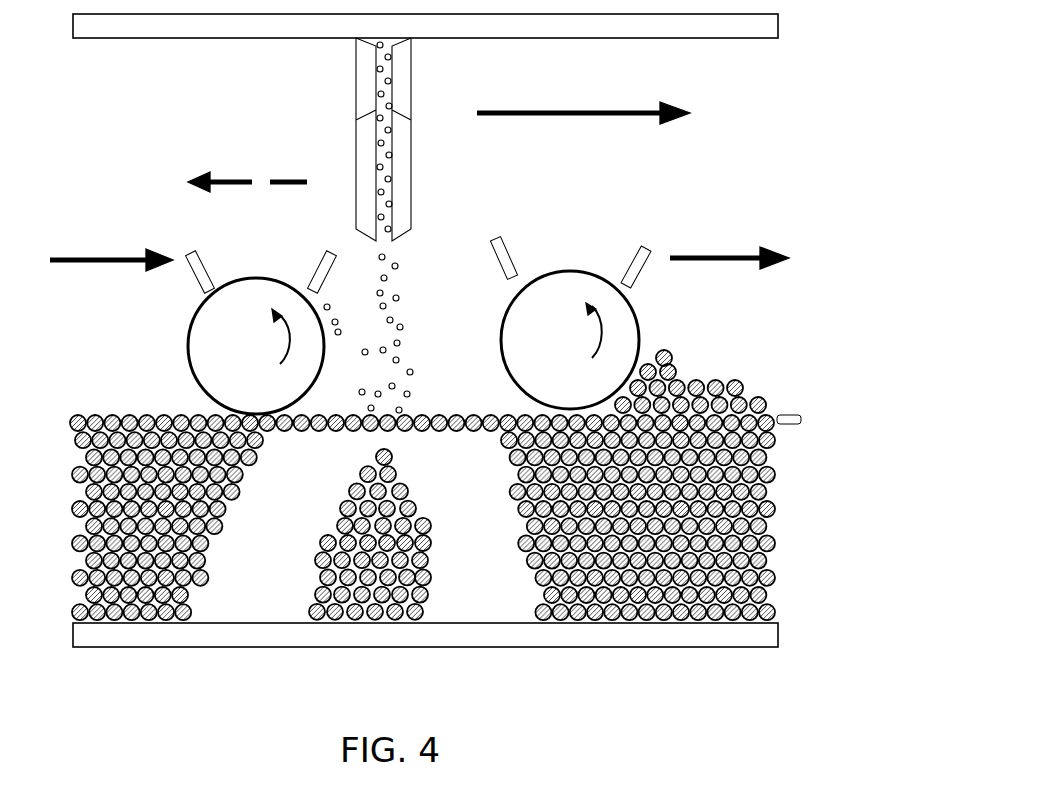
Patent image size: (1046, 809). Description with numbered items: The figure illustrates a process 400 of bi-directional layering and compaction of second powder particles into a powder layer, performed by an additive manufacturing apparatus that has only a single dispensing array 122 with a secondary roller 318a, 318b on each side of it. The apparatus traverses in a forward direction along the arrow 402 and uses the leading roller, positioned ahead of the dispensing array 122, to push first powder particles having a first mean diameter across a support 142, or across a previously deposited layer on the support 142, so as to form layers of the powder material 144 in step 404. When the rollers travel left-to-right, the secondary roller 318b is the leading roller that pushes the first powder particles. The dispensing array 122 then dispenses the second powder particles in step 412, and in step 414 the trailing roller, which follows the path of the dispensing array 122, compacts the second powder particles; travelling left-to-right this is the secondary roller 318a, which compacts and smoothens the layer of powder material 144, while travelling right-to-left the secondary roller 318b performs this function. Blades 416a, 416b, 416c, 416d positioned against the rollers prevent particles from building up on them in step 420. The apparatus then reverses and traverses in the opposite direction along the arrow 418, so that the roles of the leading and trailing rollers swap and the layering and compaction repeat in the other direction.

The process 400 is at (105, 138).
The dispensing array 122 is at (355, 164).
The support 142 is at (343, 652).
The powder material 144 is at (802, 420).
The secondary roller 318a is at (263, 366).
The secondary roller 318b is at (583, 346).
The arrow 402 is at (730, 240).
The step 404 is at (684, 374).
The step 412 is at (395, 332).
The step 414 is at (184, 396).
The blade 416a is at (190, 257).
The blade 416b is at (330, 256).
The blade 416c is at (491, 242).
The blade 416d is at (643, 250).
The arrow 418 is at (264, 179).
The step 420 is at (332, 327).